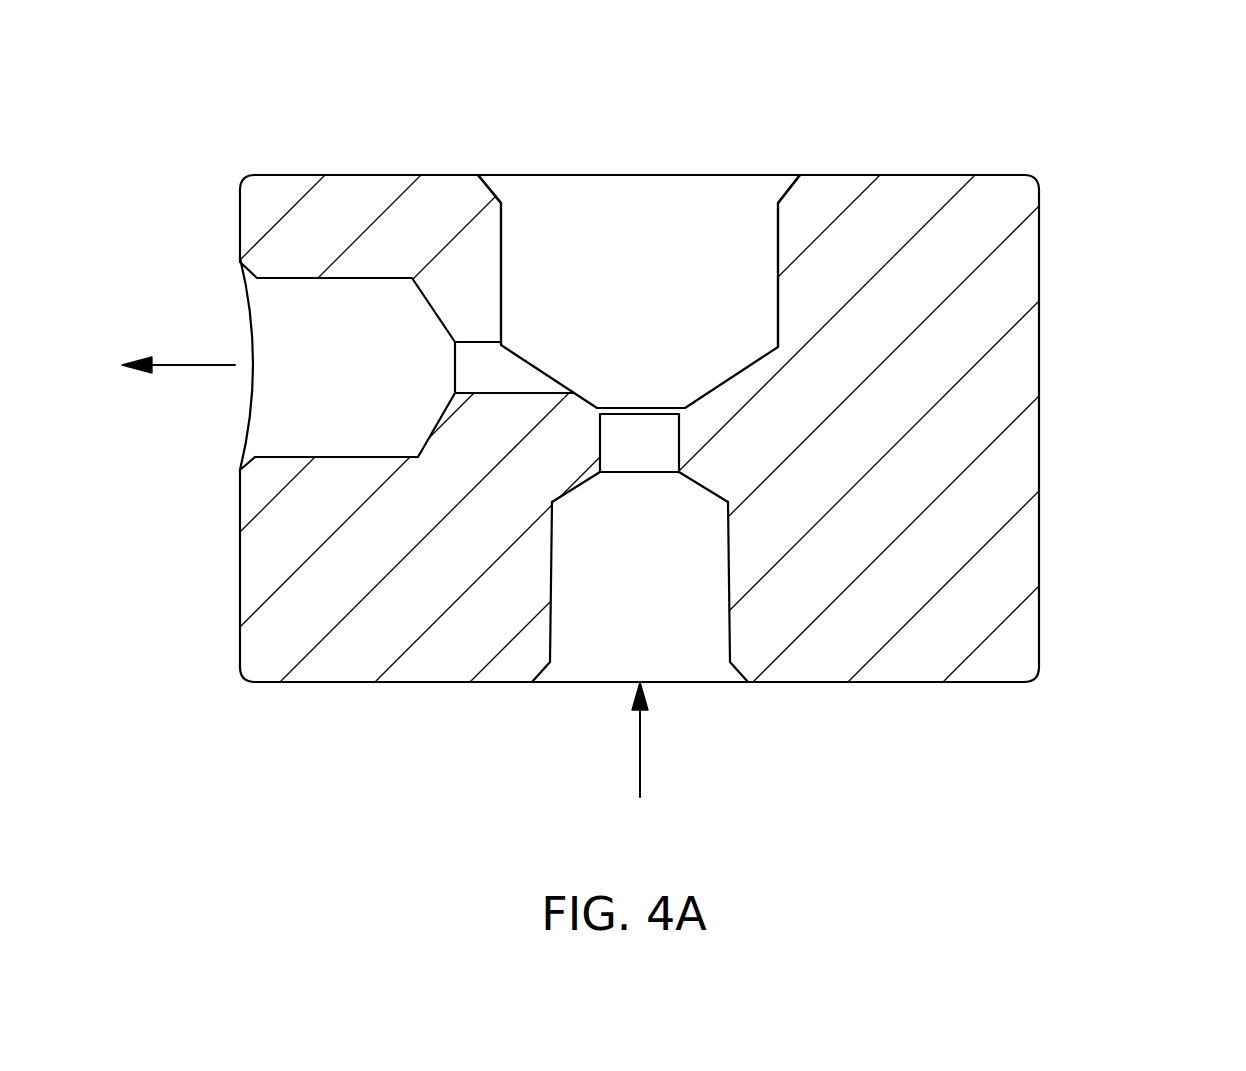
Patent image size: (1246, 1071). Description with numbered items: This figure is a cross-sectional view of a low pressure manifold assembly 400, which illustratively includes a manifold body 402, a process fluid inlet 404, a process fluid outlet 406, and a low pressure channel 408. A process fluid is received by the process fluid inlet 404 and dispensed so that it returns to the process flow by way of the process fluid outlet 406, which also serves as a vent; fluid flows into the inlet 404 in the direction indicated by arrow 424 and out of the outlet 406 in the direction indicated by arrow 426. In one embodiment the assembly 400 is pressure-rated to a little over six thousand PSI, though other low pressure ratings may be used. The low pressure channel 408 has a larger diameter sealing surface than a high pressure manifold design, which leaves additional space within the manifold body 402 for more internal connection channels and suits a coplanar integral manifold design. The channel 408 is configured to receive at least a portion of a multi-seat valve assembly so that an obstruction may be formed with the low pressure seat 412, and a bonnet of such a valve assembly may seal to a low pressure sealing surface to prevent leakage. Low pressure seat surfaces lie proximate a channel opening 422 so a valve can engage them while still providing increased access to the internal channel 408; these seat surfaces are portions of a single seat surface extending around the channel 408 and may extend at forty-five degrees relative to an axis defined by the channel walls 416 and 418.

The low pressure manifold assembly 400 is at (1140, 73).
The manifold body 402 is at (1028, 234).
The process fluid inlet 404 is at (675, 640).
The process fluid outlet 406 is at (273, 330).
The low pressure channel 408 is at (677, 192).
The low pressure seat 412 is at (653, 408).
The channel wall 416 is at (778, 232).
The channel wall 418 is at (501, 253).
The channel opening 422 is at (754, 170).
The arrow 424 is at (640, 738).
The arrow 426 is at (188, 366).